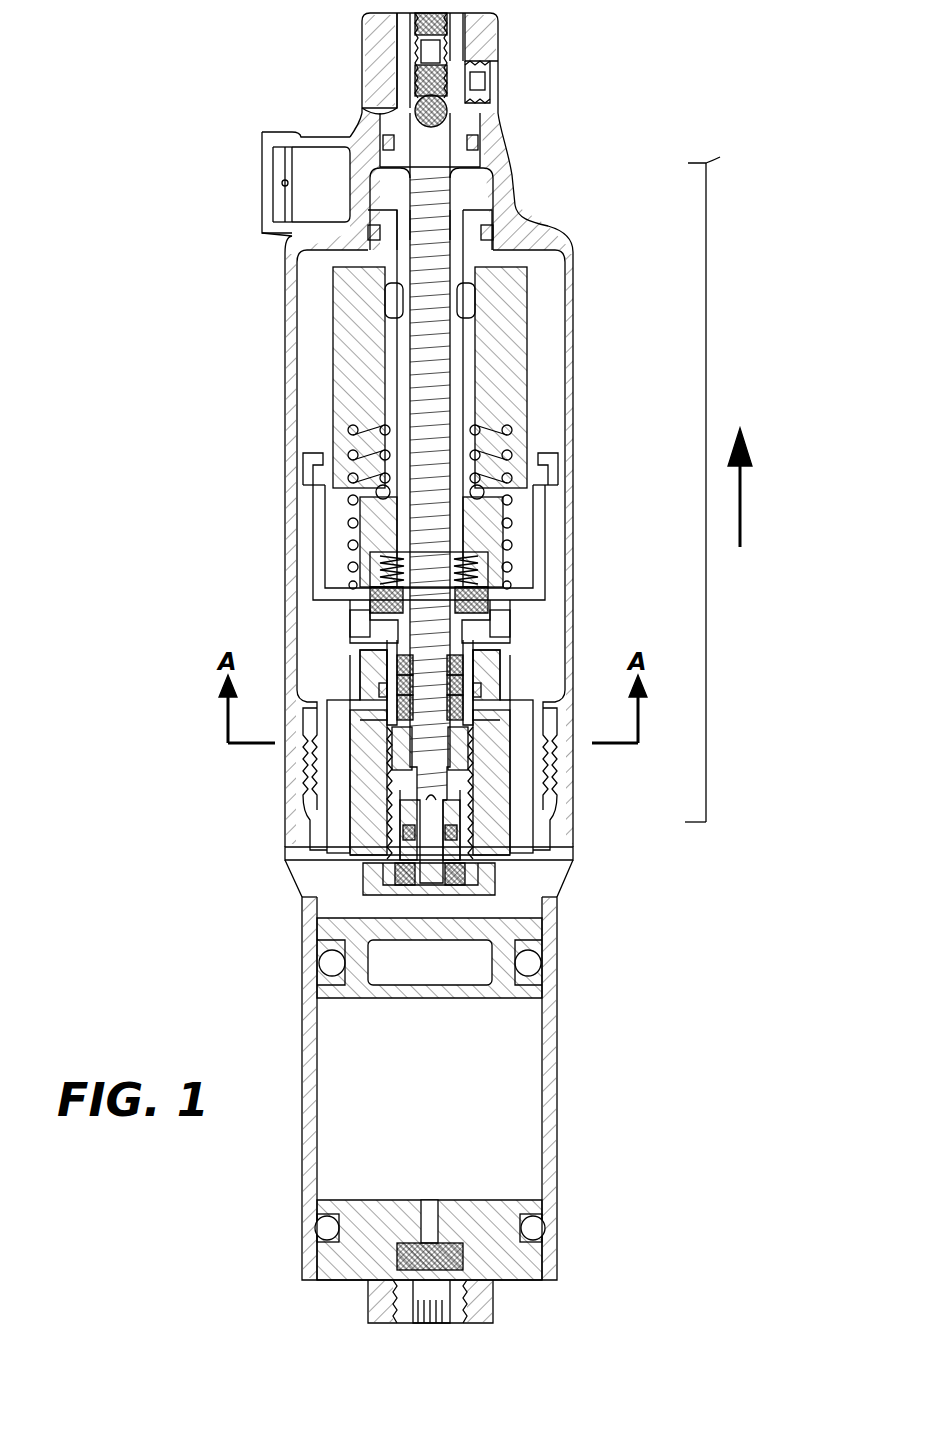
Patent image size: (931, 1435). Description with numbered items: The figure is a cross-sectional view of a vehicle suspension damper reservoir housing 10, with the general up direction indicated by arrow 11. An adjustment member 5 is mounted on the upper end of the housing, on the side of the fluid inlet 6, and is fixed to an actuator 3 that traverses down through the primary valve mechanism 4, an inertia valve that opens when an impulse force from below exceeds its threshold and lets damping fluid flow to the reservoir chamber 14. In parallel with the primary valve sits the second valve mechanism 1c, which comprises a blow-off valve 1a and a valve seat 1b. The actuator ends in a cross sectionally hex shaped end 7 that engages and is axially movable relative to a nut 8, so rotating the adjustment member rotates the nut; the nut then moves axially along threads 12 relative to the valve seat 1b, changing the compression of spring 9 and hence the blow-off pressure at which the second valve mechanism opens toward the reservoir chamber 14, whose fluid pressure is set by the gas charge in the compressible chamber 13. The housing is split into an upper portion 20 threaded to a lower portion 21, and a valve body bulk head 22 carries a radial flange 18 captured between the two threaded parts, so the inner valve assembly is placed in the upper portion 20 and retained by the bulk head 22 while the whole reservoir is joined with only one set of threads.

The blow-off valve 1a is at (353, 645).
The valve seat 1b is at (340, 607).
The second valve mechanism 1c is at (351, 610).
The actuator 3 is at (420, 343).
The primary valve mechanism 4 is at (345, 295).
The adjustment member 5 is at (365, 60).
The fluid inlet 6 is at (262, 175).
The cross sectionally hex shaped end 7 is at (423, 778).
The nut 8 is at (387, 753).
The spring 9 is at (390, 713).
The vehicle suspension damper reservoir housing 10 is at (592, 98).
The arrow 11 is at (742, 497).
The threads 12 is at (470, 790).
The compressible chamber 13 is at (443, 1098).
The reservoir chamber 14 is at (527, 893).
The radial flange 18 is at (574, 712).
The upper portion 20 is at (706, 618).
The lower portion 21 is at (650, 745).
The valve body bulk head 22 is at (528, 790).